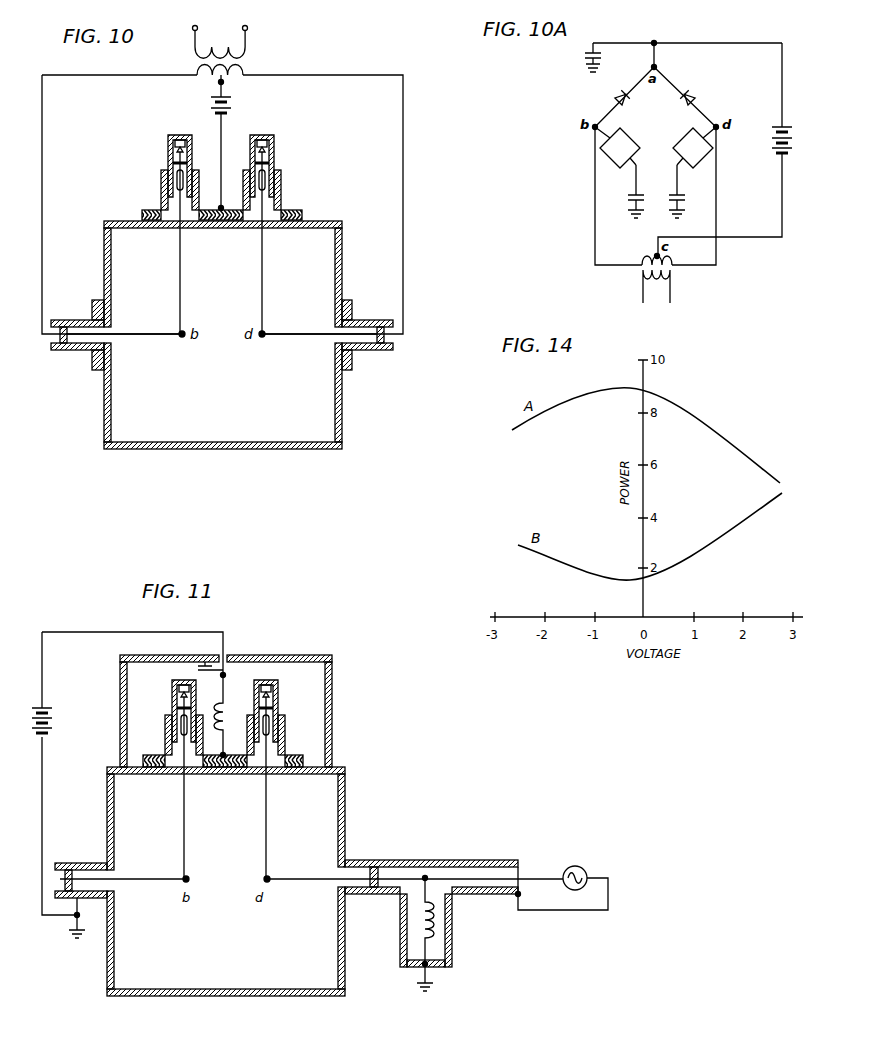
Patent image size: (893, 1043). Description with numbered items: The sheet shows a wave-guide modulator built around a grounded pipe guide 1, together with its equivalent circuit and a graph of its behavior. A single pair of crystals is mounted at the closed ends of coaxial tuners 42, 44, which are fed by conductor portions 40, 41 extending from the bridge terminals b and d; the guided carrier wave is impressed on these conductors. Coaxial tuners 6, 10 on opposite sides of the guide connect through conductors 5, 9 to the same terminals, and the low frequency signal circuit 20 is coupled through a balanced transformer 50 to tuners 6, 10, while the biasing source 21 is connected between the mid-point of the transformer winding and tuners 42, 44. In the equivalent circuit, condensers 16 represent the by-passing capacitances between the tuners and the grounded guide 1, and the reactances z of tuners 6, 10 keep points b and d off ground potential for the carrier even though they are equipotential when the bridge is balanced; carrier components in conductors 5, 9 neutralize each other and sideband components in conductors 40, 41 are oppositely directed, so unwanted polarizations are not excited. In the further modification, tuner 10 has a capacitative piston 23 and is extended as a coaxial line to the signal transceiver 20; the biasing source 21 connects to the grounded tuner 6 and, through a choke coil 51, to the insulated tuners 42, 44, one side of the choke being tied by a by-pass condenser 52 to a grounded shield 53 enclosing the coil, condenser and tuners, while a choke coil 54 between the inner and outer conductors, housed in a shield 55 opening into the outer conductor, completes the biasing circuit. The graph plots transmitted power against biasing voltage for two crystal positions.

In FIG. 10, the pipe guide 1 is at (343, 250).
In FIG. 11, the pipe guide 1 is at (346, 797).
In FIG. 10, the conductor 5 is at (152, 332).
In FIG. 10, the coaxial tuner 6 is at (74, 320).
In FIG. 10A, the coaxial tuner 6 is at (623, 141).
In FIG. 11, the coaxial tuner 6 is at (85, 865).
In FIG. 10, the conductor 9 is at (308, 333).
In FIG. 10, the coaxial tuner 10 is at (372, 320).
In FIG. 10A, the coaxial tuner 10 is at (689, 142).
In FIG. 11, the coaxial tuner 10 is at (361, 860).
In FIG. 10A, the by-pass condenser 16 is at (588, 46).
In FIG. 11, the by-pass condenser 16 is at (309, 762).
In FIG. 10, the signal circuit 20 is at (220, 34).
In FIG. 10A, the signal circuit 20 is at (655, 220).
In FIG. 11, the signal circuit 20 is at (578, 866).
In FIG. 10, the biasing source 21 is at (235, 101).
In FIG. 10A, the biasing source 21 is at (770, 142).
In FIG. 11, the biasing source 21 is at (55, 725).
In FIG. 11, the piston 23 is at (378, 866).
In FIG. 10, the conductor 40 is at (182, 274).
In FIG. 11, the conductor 40 is at (186, 829).
In FIG. 10, the conductor 41 is at (263, 272).
In FIG. 11, the conductor 41 is at (268, 829).
In FIG. 10, the coaxial tuner 42 is at (160, 178).
In FIG. 11, the coaxial tuner 42 is at (164, 733).
In FIG. 10, the coaxial tuner 44 is at (282, 178).
In FIG. 11, the coaxial tuner 44 is at (286, 733).
In FIG. 10, the balanced transformer 50 is at (253, 65).
In FIG. 11, the choke coil 51 is at (226, 713).
In FIG. 11, the by-pass condenser 52 is at (200, 664).
In FIG. 11, the shield 53 is at (333, 680).
In FIG. 11, the choke coil 54 is at (437, 916).
In FIG. 11, the shield 55 is at (453, 941).